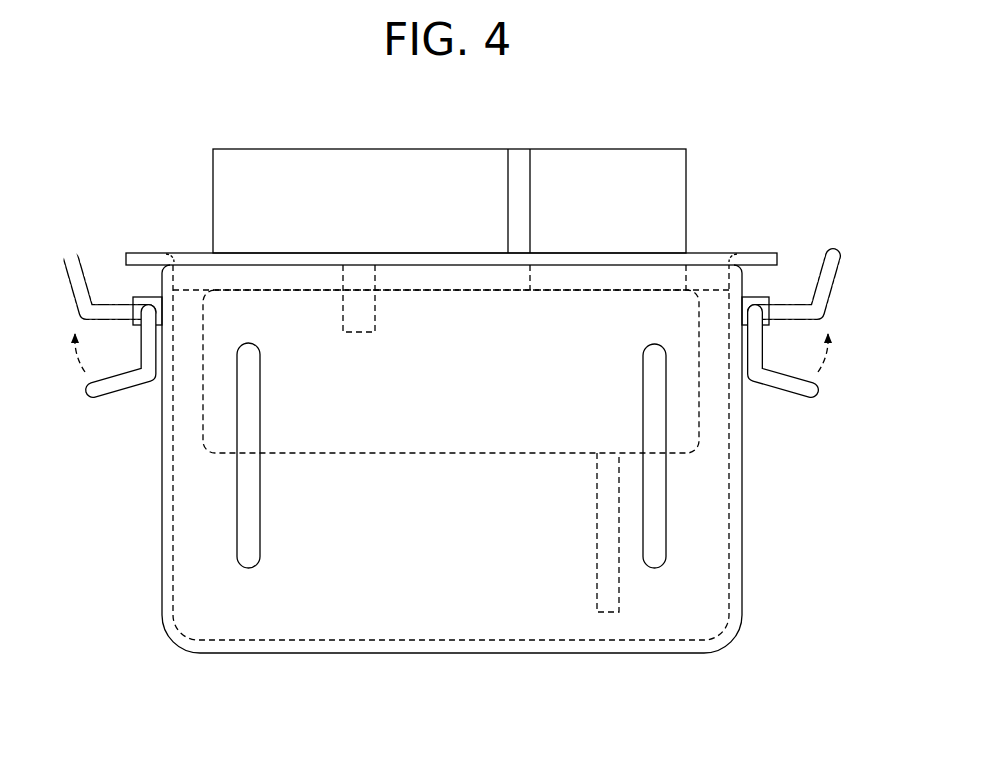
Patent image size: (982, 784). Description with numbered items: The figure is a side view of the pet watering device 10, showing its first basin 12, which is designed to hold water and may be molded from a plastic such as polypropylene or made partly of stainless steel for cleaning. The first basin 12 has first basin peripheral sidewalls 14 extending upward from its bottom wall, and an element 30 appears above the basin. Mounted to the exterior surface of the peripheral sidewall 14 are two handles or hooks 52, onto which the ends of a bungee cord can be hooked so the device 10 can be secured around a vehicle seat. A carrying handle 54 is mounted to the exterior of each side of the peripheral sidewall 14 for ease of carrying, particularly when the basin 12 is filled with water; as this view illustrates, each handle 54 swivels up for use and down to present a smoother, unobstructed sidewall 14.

The pet watering device 10 is at (705, 104).
The first basin 12 is at (160, 520).
The first basin peripheral sidewalls 14 is at (473, 526).
The housing / control box 30 is at (608, 187).
The handles or hooks 52 is at (247, 505).
The carrying handle 54 is at (78, 277).